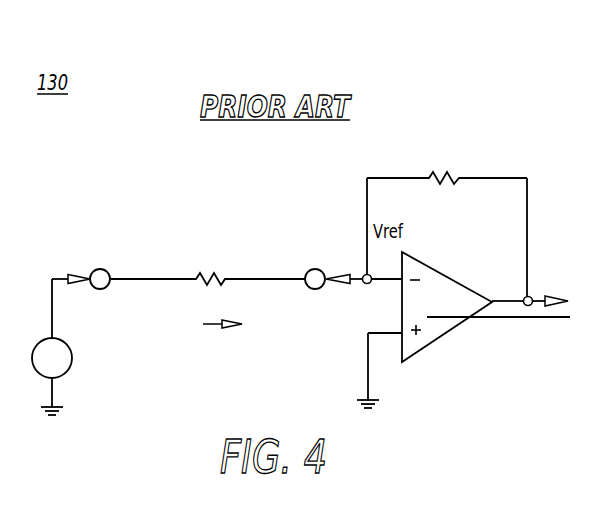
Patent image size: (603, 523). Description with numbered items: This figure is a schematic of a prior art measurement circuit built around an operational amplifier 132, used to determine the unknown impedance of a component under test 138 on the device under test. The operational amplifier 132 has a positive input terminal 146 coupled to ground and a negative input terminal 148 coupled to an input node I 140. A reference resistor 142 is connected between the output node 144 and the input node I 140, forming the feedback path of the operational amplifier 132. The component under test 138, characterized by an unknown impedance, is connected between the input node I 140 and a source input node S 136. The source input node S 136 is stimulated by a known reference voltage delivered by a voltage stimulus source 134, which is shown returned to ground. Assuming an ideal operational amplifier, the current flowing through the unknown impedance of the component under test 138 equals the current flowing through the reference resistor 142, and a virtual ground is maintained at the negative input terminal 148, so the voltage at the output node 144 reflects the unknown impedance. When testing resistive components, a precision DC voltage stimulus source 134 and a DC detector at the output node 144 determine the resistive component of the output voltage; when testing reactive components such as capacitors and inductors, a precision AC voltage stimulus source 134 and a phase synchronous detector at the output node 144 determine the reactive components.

The operational amplifier 132 is at (486, 307).
The voltage stimulus source 134 is at (71, 363).
The source input node S 136 is at (100, 268).
The component under test 138 is at (200, 270).
The input node I 140 is at (315, 269).
The reference resistor Rref 142 is at (437, 161).
The output node Vo 144 is at (530, 296).
The positive input terminal 146 is at (400, 334).
The negative input terminal 148 is at (400, 281).